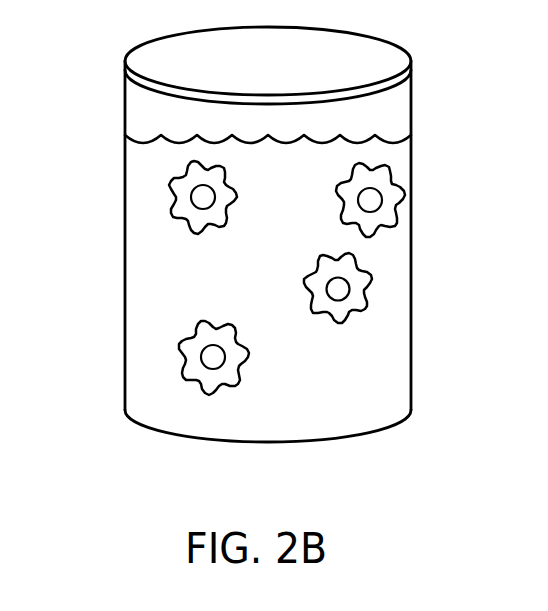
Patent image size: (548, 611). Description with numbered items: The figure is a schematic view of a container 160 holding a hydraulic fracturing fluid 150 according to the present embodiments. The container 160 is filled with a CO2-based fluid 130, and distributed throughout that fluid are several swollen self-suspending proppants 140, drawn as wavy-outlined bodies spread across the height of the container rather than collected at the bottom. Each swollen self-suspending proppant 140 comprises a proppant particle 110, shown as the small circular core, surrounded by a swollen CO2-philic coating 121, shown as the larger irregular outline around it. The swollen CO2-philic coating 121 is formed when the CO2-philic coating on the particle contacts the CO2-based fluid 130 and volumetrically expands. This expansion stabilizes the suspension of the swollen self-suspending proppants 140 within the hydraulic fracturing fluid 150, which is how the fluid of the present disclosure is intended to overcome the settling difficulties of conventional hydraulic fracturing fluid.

The proppant particle 110 is at (382, 199).
The swollen CO2-philic coating 121 is at (337, 200).
The CO2-based fluid 130 is at (392, 252).
The swollen self-suspending proppant 140 is at (338, 312).
The hydraulic fracturing fluid 150 is at (122, 440).
The container 160 is at (126, 211).